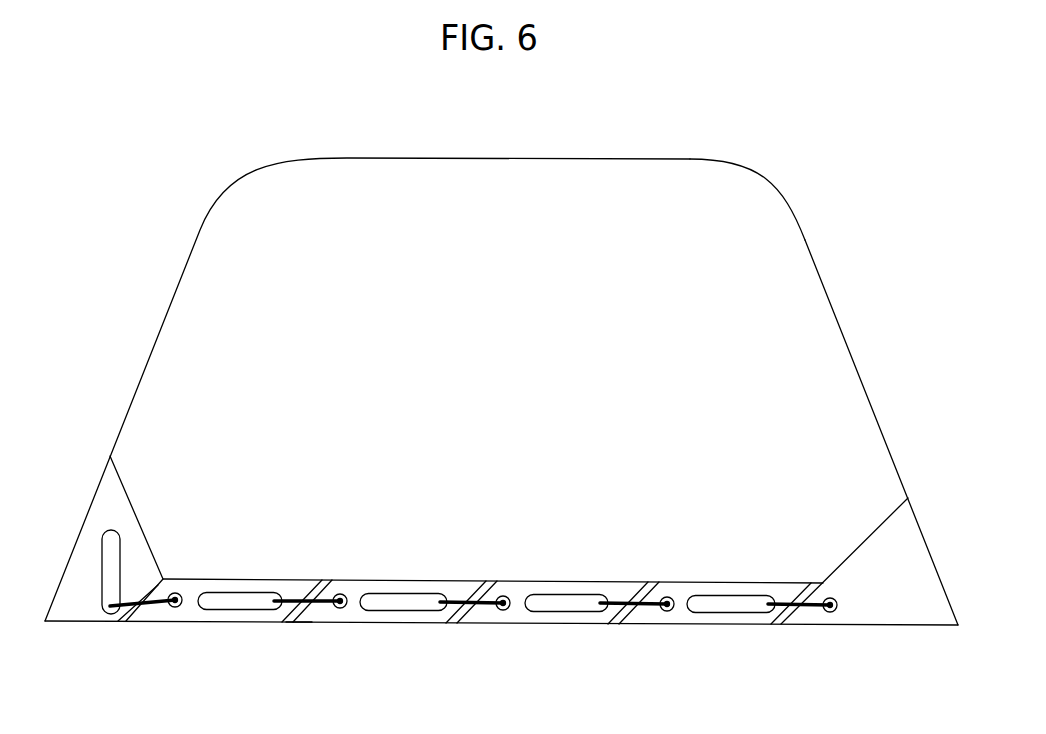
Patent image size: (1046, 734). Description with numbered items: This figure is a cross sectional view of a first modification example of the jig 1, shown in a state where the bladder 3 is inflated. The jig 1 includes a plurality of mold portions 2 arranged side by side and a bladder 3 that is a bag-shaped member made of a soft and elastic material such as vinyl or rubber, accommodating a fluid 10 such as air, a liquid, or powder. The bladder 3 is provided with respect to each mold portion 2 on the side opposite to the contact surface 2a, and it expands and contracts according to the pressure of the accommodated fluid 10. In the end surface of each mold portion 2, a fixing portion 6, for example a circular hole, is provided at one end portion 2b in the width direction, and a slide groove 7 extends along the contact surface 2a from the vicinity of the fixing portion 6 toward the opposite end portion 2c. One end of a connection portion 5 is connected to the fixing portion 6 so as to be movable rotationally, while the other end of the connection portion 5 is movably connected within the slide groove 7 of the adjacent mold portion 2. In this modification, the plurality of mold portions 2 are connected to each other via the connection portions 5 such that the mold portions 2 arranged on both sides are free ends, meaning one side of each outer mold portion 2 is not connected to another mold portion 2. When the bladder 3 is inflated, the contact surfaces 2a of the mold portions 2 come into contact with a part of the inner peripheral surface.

The jig 1 is at (769, 140).
The mold portion 2 is at (73, 605).
The contact surface 2a is at (78, 527).
The end portion 2b is at (321, 580).
The end portion 2c is at (300, 622).
The bladder 3 is at (793, 223).
The connection portion 5 is at (303, 607).
The fixing portion 6 is at (343, 610).
The slide groove 7 is at (233, 603).
The fluid 10 is at (808, 318).